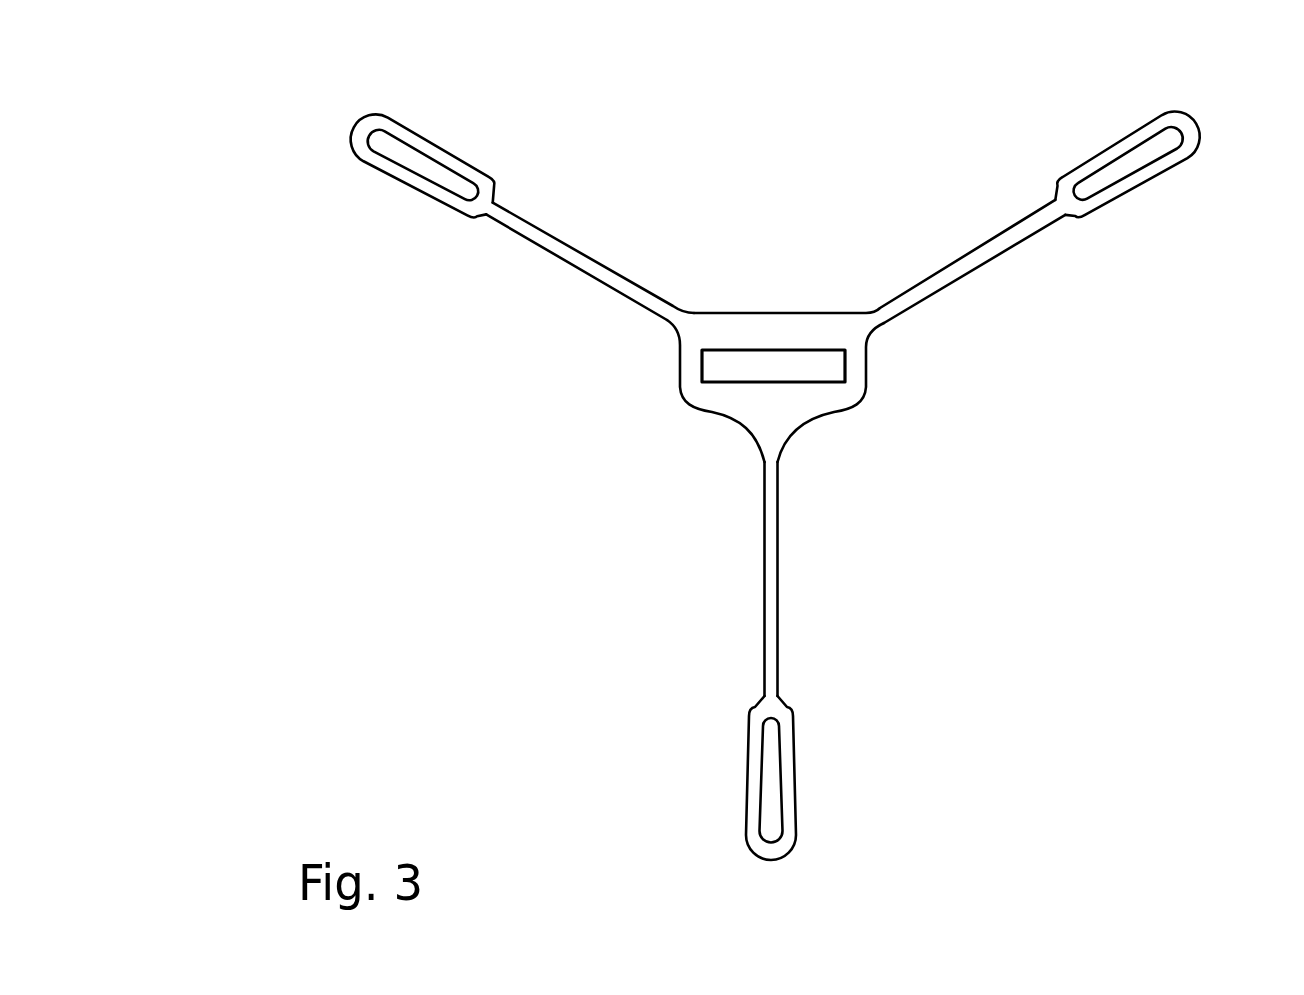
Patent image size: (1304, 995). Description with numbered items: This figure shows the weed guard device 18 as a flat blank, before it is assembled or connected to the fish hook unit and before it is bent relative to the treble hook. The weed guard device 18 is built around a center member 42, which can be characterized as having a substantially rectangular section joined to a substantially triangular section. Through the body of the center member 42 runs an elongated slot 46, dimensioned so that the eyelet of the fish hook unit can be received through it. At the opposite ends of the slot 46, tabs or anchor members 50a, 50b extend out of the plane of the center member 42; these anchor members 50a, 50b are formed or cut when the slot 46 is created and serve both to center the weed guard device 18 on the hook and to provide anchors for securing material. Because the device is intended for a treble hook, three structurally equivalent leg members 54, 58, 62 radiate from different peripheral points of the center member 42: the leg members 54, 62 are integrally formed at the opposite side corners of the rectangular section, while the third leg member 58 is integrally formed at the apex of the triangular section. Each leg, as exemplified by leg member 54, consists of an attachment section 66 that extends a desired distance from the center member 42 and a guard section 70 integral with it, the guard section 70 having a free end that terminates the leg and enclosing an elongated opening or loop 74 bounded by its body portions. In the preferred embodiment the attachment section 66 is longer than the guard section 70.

The weed guard device 18 is at (1040, 576).
The center member 42 is at (818, 323).
The elongated slot 46 is at (758, 372).
The anchor member 50a is at (693, 365).
The anchor member 50b is at (853, 362).
The leg member 54 is at (515, 230).
The third leg member 58 is at (764, 660).
The leg member 62 is at (1048, 225).
The attachment section 66 is at (590, 258).
The guard section 70 is at (416, 190).
The elongated opening or loop 74 is at (388, 150).